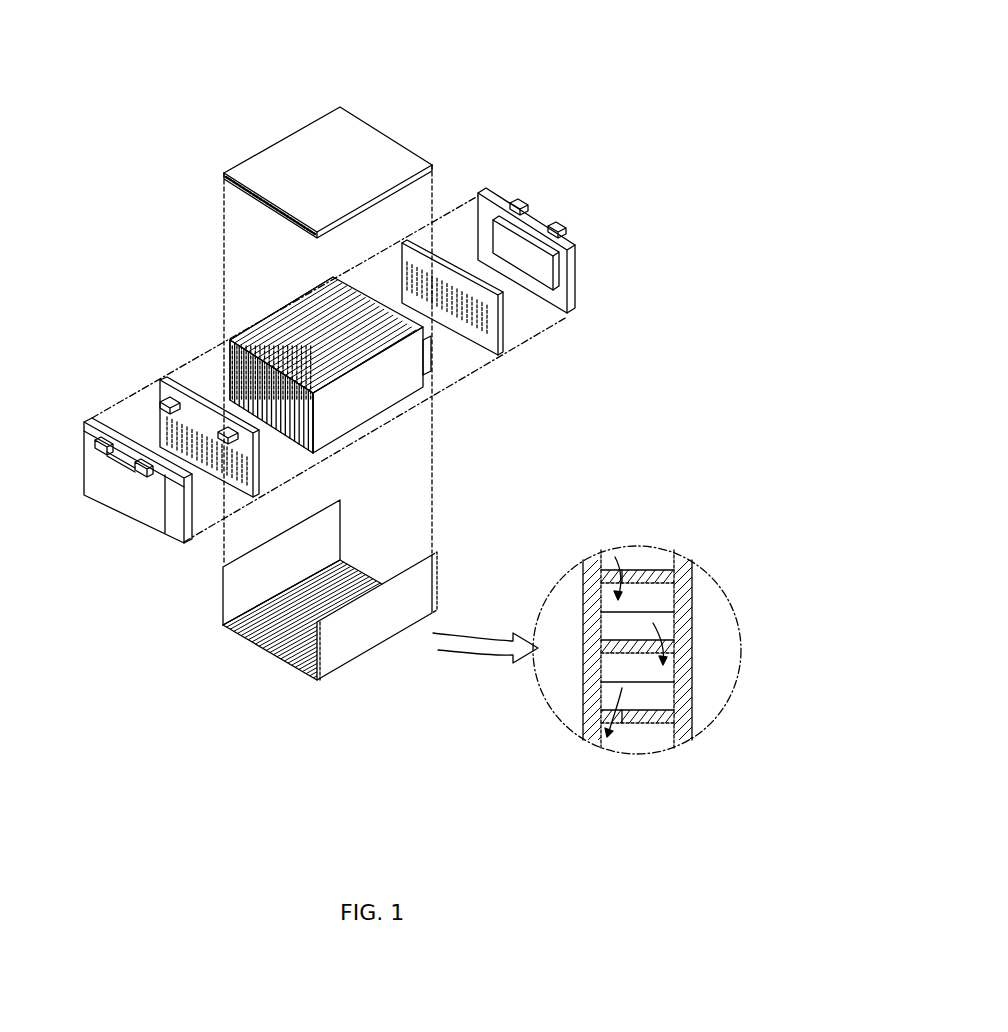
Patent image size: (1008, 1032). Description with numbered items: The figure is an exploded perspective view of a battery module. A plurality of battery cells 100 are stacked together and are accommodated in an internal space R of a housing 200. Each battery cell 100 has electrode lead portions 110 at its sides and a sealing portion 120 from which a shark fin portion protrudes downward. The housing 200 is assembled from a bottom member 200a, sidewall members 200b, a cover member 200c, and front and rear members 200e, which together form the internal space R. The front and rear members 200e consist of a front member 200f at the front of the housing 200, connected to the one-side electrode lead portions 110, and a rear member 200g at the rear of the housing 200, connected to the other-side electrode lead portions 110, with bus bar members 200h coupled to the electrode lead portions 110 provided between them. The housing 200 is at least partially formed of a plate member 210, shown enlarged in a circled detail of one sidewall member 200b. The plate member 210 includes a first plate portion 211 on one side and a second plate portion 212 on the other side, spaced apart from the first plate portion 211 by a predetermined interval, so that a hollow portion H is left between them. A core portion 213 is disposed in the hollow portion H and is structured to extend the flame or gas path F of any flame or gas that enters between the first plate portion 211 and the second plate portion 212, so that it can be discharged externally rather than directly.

The battery cell 100 is at (245, 417).
The electrode lead portion 110 is at (298, 443).
The sealing portion 120 is at (308, 432).
The housing 200 is at (698, 103).
The bottom member 200a is at (461, 480).
The sidewall member 200b is at (430, 586).
The cover member 200c is at (385, 153).
The front and rear members 200e is at (624, 52).
The front member 200f is at (88, 440).
The rear member 200g is at (520, 263).
The bus bar member 200h is at (160, 378).
The plate member 210 is at (641, 705).
The first plate portion 211 is at (598, 730).
The second plate portion 212 is at (683, 730).
The core portion 213 is at (652, 720).
The internal space R is at (244, 628).
The hollow portion H is at (636, 558).
The flame or gas path F is at (605, 590).